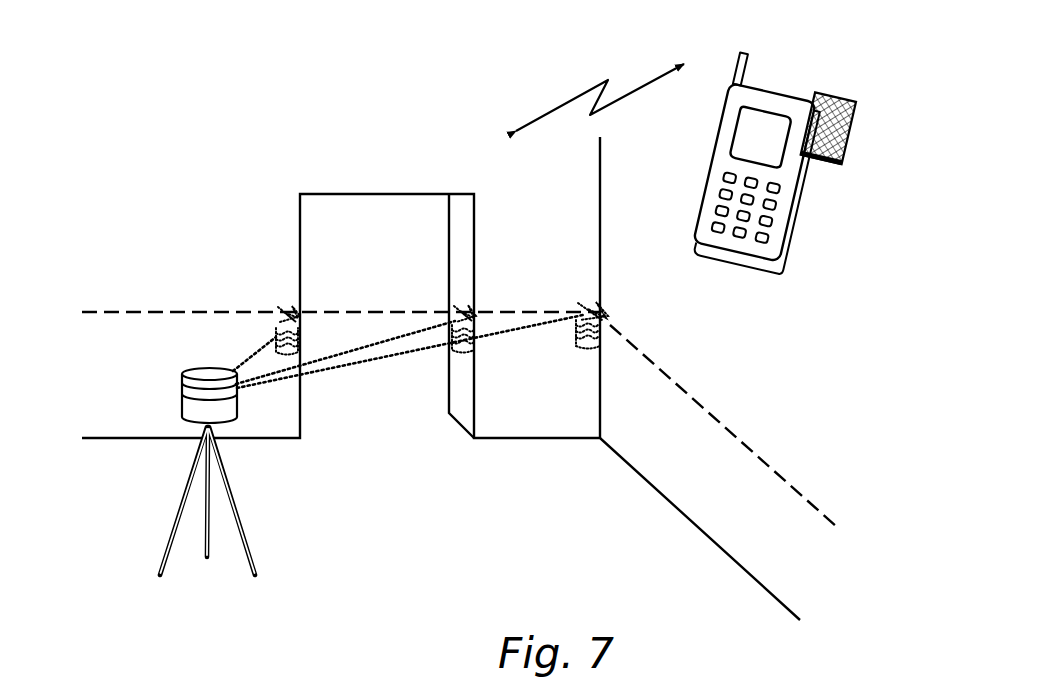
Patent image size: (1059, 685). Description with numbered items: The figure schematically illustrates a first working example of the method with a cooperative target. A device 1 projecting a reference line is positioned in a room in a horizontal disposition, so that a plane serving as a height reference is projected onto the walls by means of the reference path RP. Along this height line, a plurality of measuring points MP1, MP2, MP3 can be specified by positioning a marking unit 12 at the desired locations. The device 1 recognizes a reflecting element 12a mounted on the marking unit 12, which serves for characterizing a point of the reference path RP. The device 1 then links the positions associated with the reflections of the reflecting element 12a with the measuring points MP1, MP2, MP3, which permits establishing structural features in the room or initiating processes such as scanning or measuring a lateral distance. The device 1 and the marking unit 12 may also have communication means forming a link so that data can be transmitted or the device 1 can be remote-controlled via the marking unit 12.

The device projecting a reference line 1 is at (158, 365).
The marking unit 12 is at (745, 253).
The reflecting element 12a is at (825, 52).
The reference path RP is at (208, 311).
The measuring point MP1 is at (616, 314).
The measuring point MP2 is at (489, 316).
The measuring point MP3 is at (268, 317).